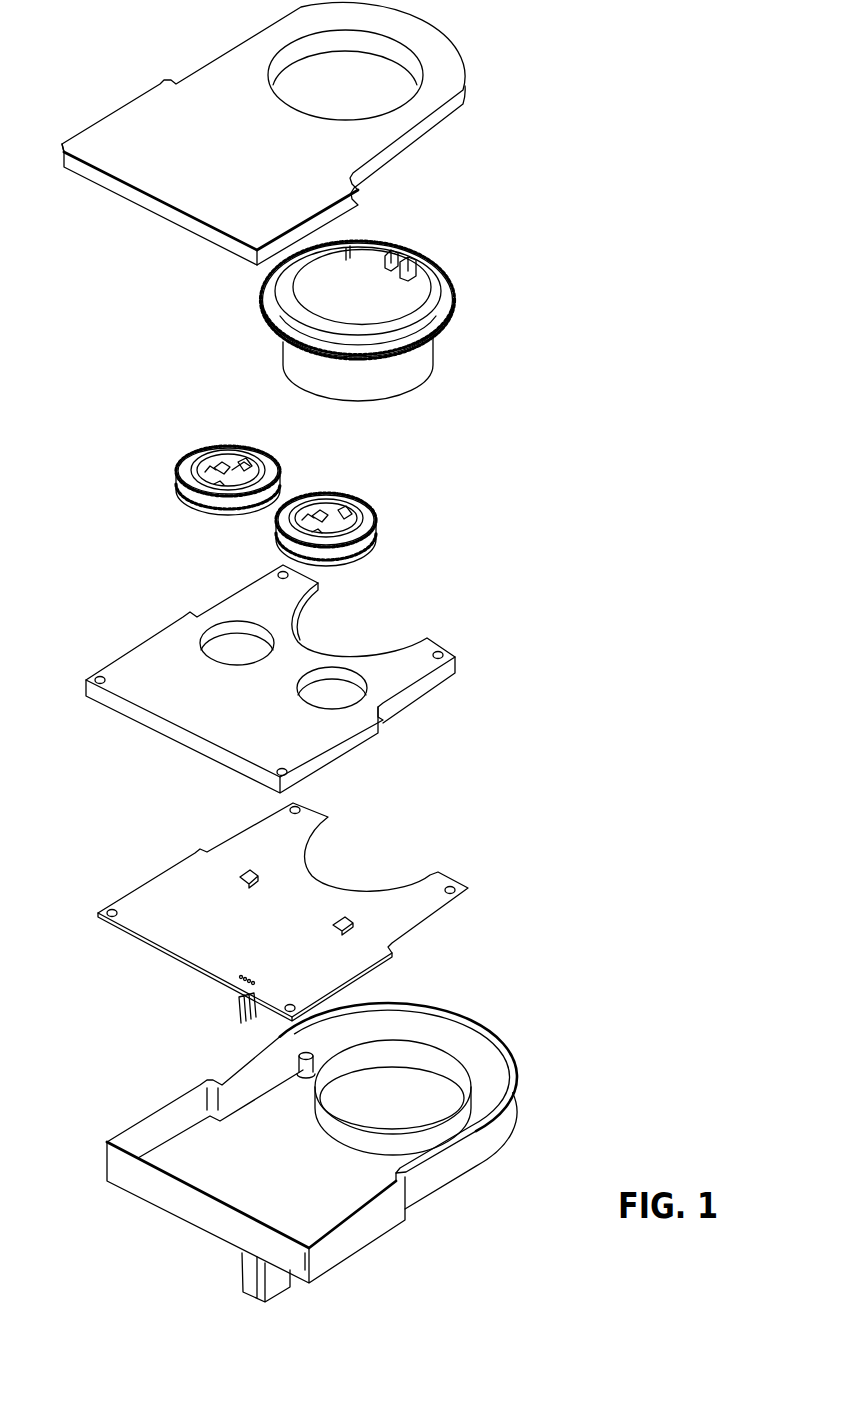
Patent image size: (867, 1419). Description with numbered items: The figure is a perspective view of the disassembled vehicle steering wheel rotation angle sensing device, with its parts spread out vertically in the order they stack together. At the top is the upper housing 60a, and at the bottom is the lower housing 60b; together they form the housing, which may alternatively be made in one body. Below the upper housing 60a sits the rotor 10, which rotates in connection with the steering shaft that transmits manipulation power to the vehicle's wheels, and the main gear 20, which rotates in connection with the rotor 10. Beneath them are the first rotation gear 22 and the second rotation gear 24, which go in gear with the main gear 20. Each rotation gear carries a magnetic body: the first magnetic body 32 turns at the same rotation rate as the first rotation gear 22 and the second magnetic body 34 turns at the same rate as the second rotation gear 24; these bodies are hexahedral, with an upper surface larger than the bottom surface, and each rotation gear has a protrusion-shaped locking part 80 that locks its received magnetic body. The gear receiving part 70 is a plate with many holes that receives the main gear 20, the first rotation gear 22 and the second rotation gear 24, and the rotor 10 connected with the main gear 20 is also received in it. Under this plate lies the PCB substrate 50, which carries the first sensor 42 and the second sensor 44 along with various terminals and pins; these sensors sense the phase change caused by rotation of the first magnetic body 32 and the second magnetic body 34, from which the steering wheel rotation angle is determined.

The rotor 10 is at (412, 370).
The main gear 20 is at (439, 298).
The first rotation gear 22 is at (178, 476).
The second rotation gear 24 is at (376, 520).
The first magnetic body 32 is at (218, 463).
The second magnetic body 34 is at (328, 513).
The first sensor 42 is at (240, 874).
The second sensor 44 is at (355, 925).
The PCB substrate 50 is at (322, 890).
The upper housing 60a is at (395, 135).
The lower housing 60b is at (158, 1127).
The gear receiving part 70 is at (145, 657).
The locking part 80 is at (245, 453).